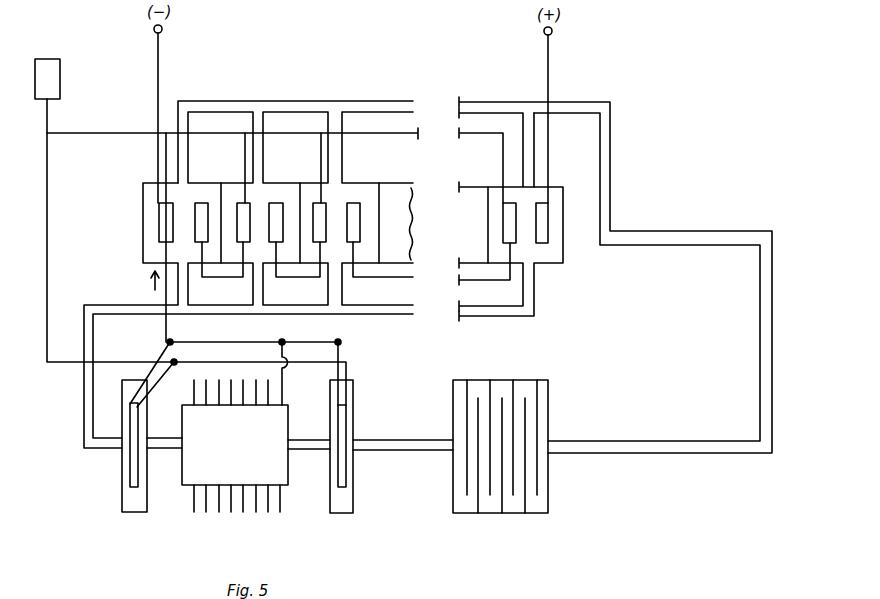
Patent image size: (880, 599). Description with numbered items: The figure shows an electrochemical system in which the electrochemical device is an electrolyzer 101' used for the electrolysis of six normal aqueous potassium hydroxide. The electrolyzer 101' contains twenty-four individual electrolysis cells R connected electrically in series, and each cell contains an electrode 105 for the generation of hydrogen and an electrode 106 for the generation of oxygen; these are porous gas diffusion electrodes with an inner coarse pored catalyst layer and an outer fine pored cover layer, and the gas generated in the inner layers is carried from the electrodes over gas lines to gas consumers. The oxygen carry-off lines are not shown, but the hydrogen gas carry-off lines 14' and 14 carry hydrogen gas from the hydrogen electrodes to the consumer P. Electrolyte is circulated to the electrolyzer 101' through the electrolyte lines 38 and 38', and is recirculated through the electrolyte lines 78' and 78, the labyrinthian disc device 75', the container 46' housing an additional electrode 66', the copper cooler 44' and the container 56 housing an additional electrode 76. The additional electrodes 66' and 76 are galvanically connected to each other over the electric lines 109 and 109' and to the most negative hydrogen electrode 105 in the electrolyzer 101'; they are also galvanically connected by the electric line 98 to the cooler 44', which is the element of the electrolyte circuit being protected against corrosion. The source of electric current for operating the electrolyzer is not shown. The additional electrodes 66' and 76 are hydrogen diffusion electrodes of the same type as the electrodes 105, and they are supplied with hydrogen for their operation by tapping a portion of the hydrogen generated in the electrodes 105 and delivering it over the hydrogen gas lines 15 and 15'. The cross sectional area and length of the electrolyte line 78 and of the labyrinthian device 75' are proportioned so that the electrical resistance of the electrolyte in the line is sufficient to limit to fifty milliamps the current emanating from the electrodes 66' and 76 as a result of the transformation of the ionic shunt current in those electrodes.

The consumer P is at (61, 72).
The hydrogen gas carry-off line 14 is at (275, 165).
The hydrogen gas carry-off line 14' is at (334, 210).
The hydrogen gas line 15 is at (176, 252).
The hydrogen gas line 15' is at (268, 384).
The electrolyte line 38 is at (107, 338).
The electrolyte line 38' is at (381, 247).
The copper cooler 44' is at (235, 461).
The container 46' is at (362, 461).
The container 56 is at (135, 512).
The additional electrode 66' is at (323, 472).
The labyrinthian disc device 75' is at (500, 464).
The additional electrode 76 is at (130, 490).
The electrolyte line 78 is at (428, 275).
The electrolyte line 78' is at (361, 150).
The electric line 98 is at (284, 386).
The electrolyzer 101' is at (125, 263).
The electrode 105 is at (158, 206).
The electrode 106 is at (201, 203).
The electric line 109 is at (254, 342).
The electric line 109' is at (264, 373).